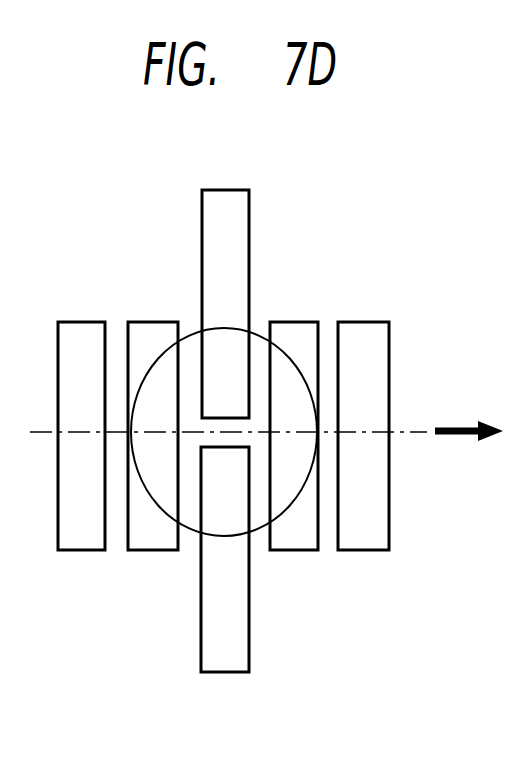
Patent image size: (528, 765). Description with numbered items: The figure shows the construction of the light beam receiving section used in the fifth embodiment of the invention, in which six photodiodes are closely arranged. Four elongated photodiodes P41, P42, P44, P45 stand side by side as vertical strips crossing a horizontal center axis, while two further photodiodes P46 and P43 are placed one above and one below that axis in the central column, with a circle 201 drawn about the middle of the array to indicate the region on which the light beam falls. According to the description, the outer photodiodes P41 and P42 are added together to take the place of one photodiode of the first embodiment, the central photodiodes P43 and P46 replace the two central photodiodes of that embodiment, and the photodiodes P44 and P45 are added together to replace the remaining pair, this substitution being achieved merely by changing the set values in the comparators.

The photodiode P41 is at (93, 550).
The photodiode P42 is at (165, 550).
The photodiode P43 is at (233, 672).
The photodiode P44 is at (303, 550).
The photodiode P45 is at (380, 550).
The photodiode P46 is at (230, 190).
The circular region 201 is at (253, 333).